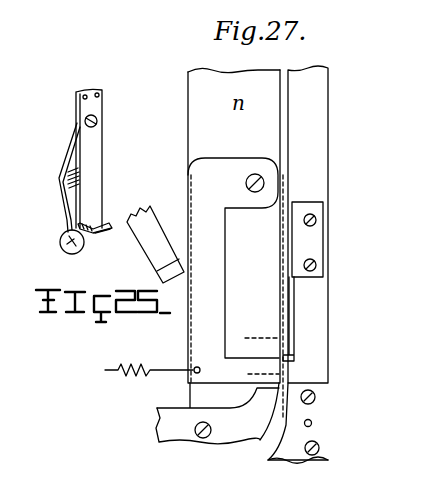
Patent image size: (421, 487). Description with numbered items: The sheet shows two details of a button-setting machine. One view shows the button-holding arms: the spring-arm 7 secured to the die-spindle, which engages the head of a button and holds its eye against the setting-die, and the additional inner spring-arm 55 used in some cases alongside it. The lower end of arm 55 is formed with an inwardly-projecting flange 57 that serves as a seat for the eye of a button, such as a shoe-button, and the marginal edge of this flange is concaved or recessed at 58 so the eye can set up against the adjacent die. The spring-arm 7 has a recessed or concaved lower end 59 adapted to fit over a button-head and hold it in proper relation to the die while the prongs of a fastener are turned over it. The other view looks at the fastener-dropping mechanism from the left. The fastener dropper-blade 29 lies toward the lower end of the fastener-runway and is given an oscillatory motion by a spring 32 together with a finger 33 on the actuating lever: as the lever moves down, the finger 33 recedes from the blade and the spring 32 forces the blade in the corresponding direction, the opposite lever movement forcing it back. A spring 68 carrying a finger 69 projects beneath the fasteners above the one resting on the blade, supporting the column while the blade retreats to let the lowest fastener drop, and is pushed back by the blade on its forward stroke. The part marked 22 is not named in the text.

In FIG. 25, the spring-arm 7 is at (60, 207).
In FIG. 25, the additional spring-arm 55 is at (96, 173).
In FIG. 25, the inwardly-projecting flange 57 is at (105, 226).
In FIG. 25, the concaved marginal edge 58 is at (108, 231).
In FIG. 25, the recessed lower end 59 is at (61, 249).
In FIG. 25, the finger 33 is at (150, 231).
In FIG. 27, the fastener dropper-blade 29 is at (233, 270).
In FIG. 27, the spring 68 is at (318, 240).
In FIG. 27, the finger 69 is at (296, 357).
In FIG. 27, the spring 32 is at (152, 360).
In FIG. 27, the lower bracket 22 is at (217, 413).